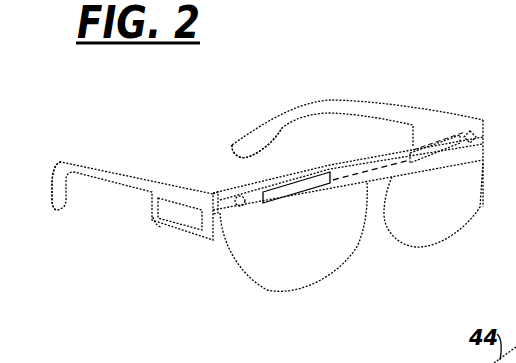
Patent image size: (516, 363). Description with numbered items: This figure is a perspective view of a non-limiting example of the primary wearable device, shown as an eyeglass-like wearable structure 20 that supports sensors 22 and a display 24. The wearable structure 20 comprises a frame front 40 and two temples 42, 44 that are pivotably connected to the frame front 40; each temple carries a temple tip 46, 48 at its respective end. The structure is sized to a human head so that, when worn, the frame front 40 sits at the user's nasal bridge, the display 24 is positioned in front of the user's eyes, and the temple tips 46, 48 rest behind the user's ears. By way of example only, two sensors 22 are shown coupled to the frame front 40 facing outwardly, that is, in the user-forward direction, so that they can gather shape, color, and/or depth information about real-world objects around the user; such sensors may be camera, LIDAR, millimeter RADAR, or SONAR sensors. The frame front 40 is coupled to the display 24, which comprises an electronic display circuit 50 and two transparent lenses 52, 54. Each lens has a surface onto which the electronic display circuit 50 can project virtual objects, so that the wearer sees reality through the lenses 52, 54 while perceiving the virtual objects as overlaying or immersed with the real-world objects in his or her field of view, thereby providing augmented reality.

The wearable structure 20 is at (399, 109).
The sensors 22 is at (467, 141).
The display 24 is at (432, 248).
The frame front 40 is at (376, 176).
The temple 42 is at (176, 183).
The temple 44 is at (374, 104).
The temple tip 46 is at (60, 192).
The temple tip 48 is at (250, 145).
The electronic display circuit 50 is at (293, 182).
The transparent lens 52 is at (286, 292).
The transparent lens 54 is at (471, 217).